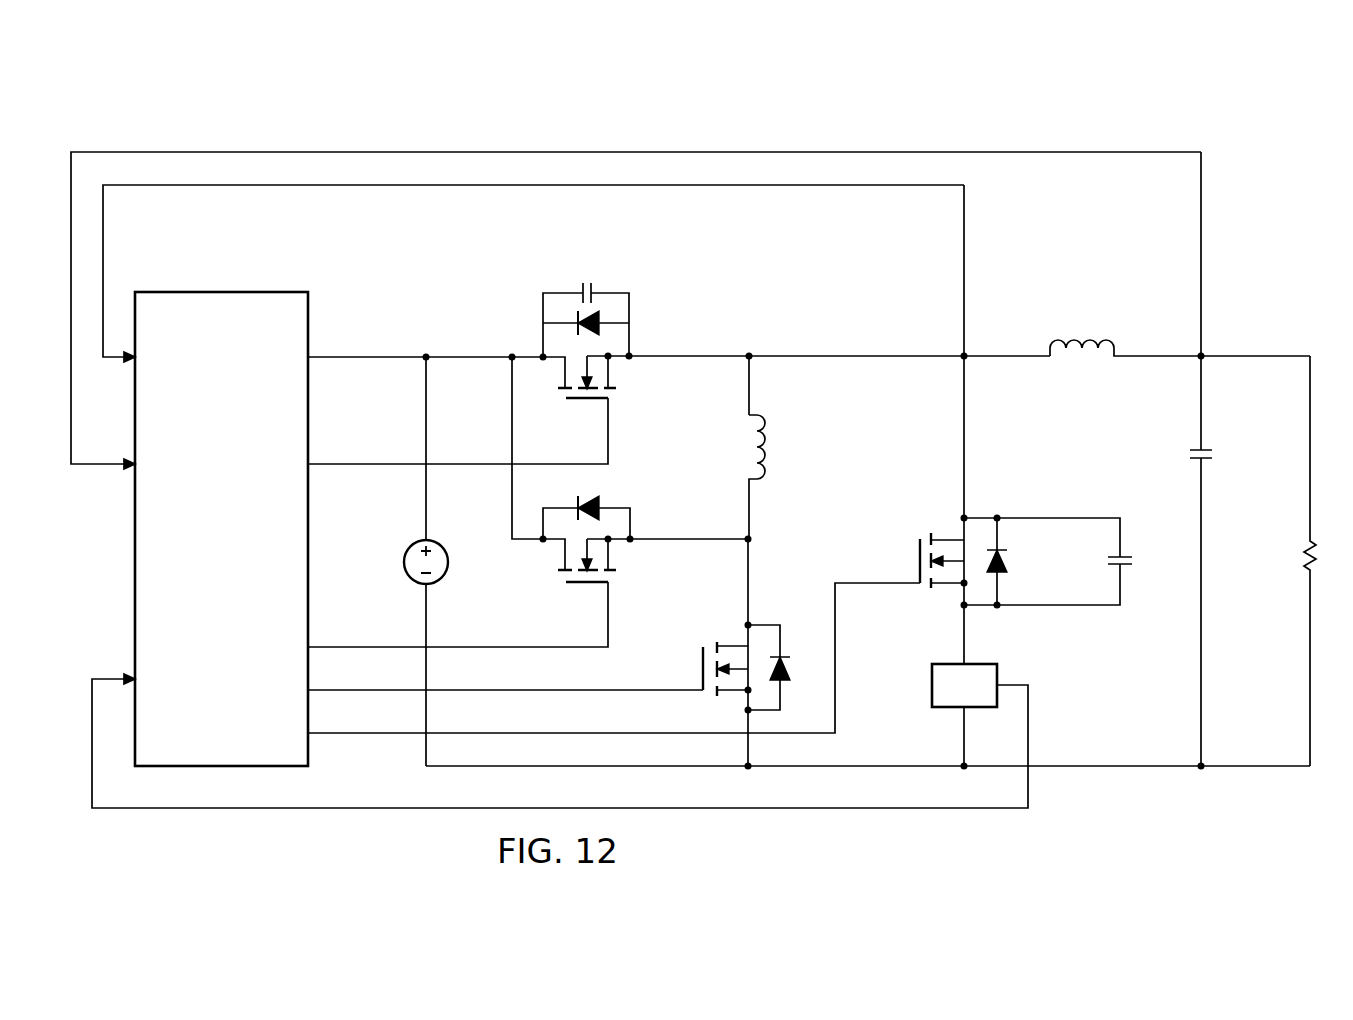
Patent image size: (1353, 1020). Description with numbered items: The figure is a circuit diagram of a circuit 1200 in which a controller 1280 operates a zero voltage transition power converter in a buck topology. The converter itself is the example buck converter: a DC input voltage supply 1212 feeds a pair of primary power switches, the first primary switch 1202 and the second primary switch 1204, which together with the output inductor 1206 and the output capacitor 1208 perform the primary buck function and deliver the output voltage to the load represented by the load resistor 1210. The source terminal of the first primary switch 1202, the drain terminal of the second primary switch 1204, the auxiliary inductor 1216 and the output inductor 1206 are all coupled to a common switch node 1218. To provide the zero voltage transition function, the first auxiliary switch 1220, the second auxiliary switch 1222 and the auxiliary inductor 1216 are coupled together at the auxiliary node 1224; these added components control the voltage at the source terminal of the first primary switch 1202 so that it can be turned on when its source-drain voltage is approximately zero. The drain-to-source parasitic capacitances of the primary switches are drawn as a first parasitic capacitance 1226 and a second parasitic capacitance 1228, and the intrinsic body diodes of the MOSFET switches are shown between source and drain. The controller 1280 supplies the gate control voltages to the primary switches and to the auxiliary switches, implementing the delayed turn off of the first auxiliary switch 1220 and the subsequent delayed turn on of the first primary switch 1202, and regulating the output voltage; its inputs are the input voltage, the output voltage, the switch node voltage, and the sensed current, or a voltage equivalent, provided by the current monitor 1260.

The circuit 1200 is at (368, 108).
The primary power switch S1 1202 is at (576, 402).
The primary power switch S2 1204 is at (917, 552).
The output inductor Lo 1206 is at (1108, 340).
The capacitor Co 1208 is at (1188, 452).
The resistor Ro 1210 is at (1303, 553).
The DC input voltage supply Vin 1212 is at (405, 560).
The auxiliary inductor La 1216 is at (767, 425).
The switch node 1218 is at (745, 362).
The first auxiliary switch Sa1 1220 is at (580, 588).
The second auxiliary switch Sa2 1222 is at (701, 660).
The auxiliary node 1224 is at (745, 537).
The capacitance Cds1 1226 is at (587, 283).
The capacitance Cds2 1228 is at (1107, 560).
The current monitor 1260 is at (930, 697).
The controller 1280 is at (221, 529).